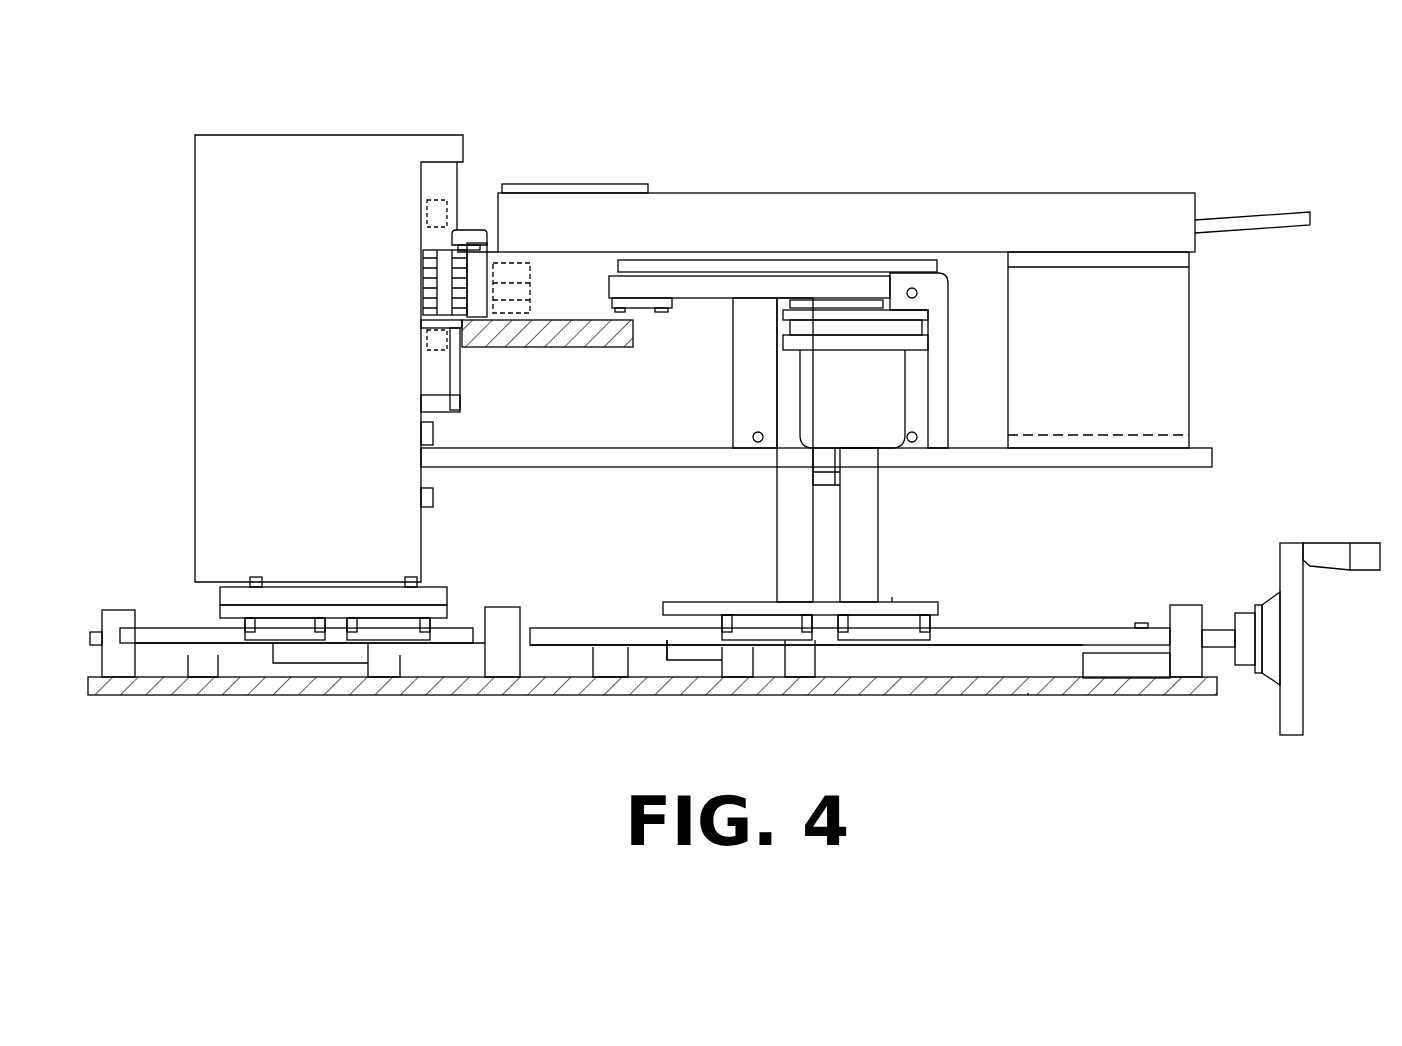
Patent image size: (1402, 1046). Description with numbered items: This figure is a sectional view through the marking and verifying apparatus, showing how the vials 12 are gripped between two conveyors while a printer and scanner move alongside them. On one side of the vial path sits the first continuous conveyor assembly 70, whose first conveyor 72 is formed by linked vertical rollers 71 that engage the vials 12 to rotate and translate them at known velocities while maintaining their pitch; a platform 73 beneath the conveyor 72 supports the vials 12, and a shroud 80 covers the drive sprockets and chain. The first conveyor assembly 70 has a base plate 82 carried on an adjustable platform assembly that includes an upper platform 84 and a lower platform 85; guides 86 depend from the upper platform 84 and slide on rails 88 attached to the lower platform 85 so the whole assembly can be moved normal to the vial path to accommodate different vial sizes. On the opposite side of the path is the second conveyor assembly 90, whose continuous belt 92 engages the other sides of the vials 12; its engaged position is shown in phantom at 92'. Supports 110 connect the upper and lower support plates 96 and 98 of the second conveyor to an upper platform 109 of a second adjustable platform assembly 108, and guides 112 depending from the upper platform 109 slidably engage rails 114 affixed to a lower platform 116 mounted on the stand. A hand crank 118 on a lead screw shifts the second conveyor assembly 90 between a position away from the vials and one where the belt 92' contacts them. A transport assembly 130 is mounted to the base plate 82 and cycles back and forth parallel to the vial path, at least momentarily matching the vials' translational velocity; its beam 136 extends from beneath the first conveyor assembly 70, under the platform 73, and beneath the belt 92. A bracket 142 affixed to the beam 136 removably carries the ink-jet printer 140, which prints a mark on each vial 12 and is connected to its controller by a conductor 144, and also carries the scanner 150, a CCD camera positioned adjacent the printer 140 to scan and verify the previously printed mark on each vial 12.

The vials 12 is at (478, 258).
The first continuous conveyor assembly 70 is at (352, 195).
The linked vertical rollers 71 is at (468, 283).
The first conveyor 72 is at (441, 262).
The platform 73 is at (533, 340).
The shroud 80 is at (258, 192).
The base plate 82 is at (228, 595).
The upper platform 84 is at (228, 612).
The lower platform 85 is at (170, 690).
The guides 86 is at (297, 632).
The rails 88 is at (447, 645).
The second conveyor assembly 90 is at (665, 255).
The continuous belt 92 is at (749, 226).
The belt in engaged position 92' is at (541, 288).
The upper support plate 96 is at (793, 265).
The lower support plate 98 is at (852, 315).
The adjustable platform assembly 108 is at (892, 600).
The upper platform 109 is at (938, 608).
The supports 110 is at (777, 525).
The guides 112 is at (775, 630).
The rails 114 is at (1050, 636).
The lower platform 116 is at (1028, 690).
The hand crank 118 is at (1287, 713).
The transport assembly 130 is at (437, 498).
The beam 136 is at (1100, 462).
The printer 140 is at (1073, 212).
The bracket 142 is at (1139, 350).
The conductor 144 is at (1260, 225).
The scanner 150 is at (620, 185).